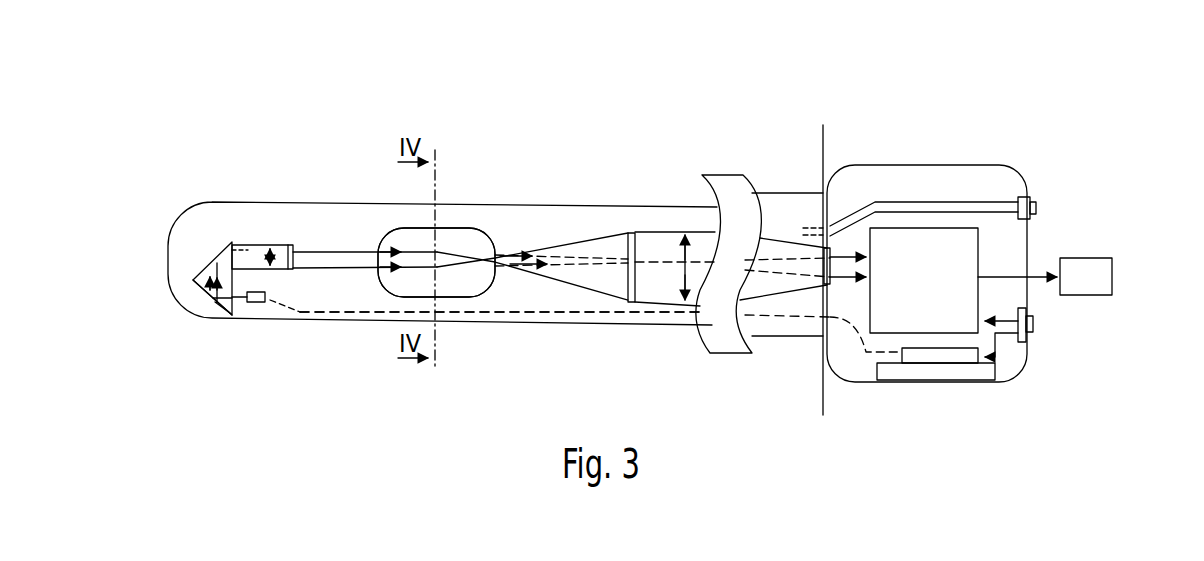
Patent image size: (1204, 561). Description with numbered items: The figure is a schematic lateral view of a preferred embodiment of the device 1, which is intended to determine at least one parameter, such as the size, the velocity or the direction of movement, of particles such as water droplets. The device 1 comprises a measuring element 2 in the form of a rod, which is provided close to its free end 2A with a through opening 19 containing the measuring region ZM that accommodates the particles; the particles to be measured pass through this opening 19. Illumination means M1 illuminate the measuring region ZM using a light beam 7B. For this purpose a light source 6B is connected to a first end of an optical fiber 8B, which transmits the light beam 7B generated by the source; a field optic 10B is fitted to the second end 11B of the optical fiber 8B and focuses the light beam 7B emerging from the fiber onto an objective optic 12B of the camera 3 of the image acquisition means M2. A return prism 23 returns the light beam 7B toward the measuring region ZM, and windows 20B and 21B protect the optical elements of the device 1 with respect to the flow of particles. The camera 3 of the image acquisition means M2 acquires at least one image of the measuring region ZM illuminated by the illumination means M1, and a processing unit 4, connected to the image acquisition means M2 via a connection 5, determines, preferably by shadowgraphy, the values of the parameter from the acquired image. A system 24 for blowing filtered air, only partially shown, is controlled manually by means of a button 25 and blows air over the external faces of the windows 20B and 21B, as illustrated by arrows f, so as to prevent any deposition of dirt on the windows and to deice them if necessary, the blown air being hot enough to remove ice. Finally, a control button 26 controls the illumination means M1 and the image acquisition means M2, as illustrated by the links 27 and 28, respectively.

The device 1 is at (775, 168).
The measuring element 2 is at (500, 325).
The free end 2A is at (455, 168).
The camera 3 is at (960, 255).
The processing unit 4 is at (1080, 295).
The connection 5 is at (1033, 277).
The light source 6B is at (937, 360).
The light beam 7B is at (357, 243).
The optical fiber 8B is at (610, 314).
The field optic 10B is at (247, 247).
The second end 11B is at (257, 302).
The objective optic 12B is at (690, 240).
The through opening 19 is at (396, 228).
The window 20B is at (300, 247).
The window 21B is at (643, 237).
The return prism 23 is at (212, 318).
The system for blowing filtered air 24 is at (965, 203).
The button 25 is at (1034, 207).
The control button 26 is at (1036, 326).
The link 27 is at (1033, 330).
The link 28 is at (998, 314).
The illumination means M1 is at (277, 307).
The image acquisition means M2 is at (913, 224).
The measuring region ZM is at (455, 285).
The arrows f is at (298, 236).